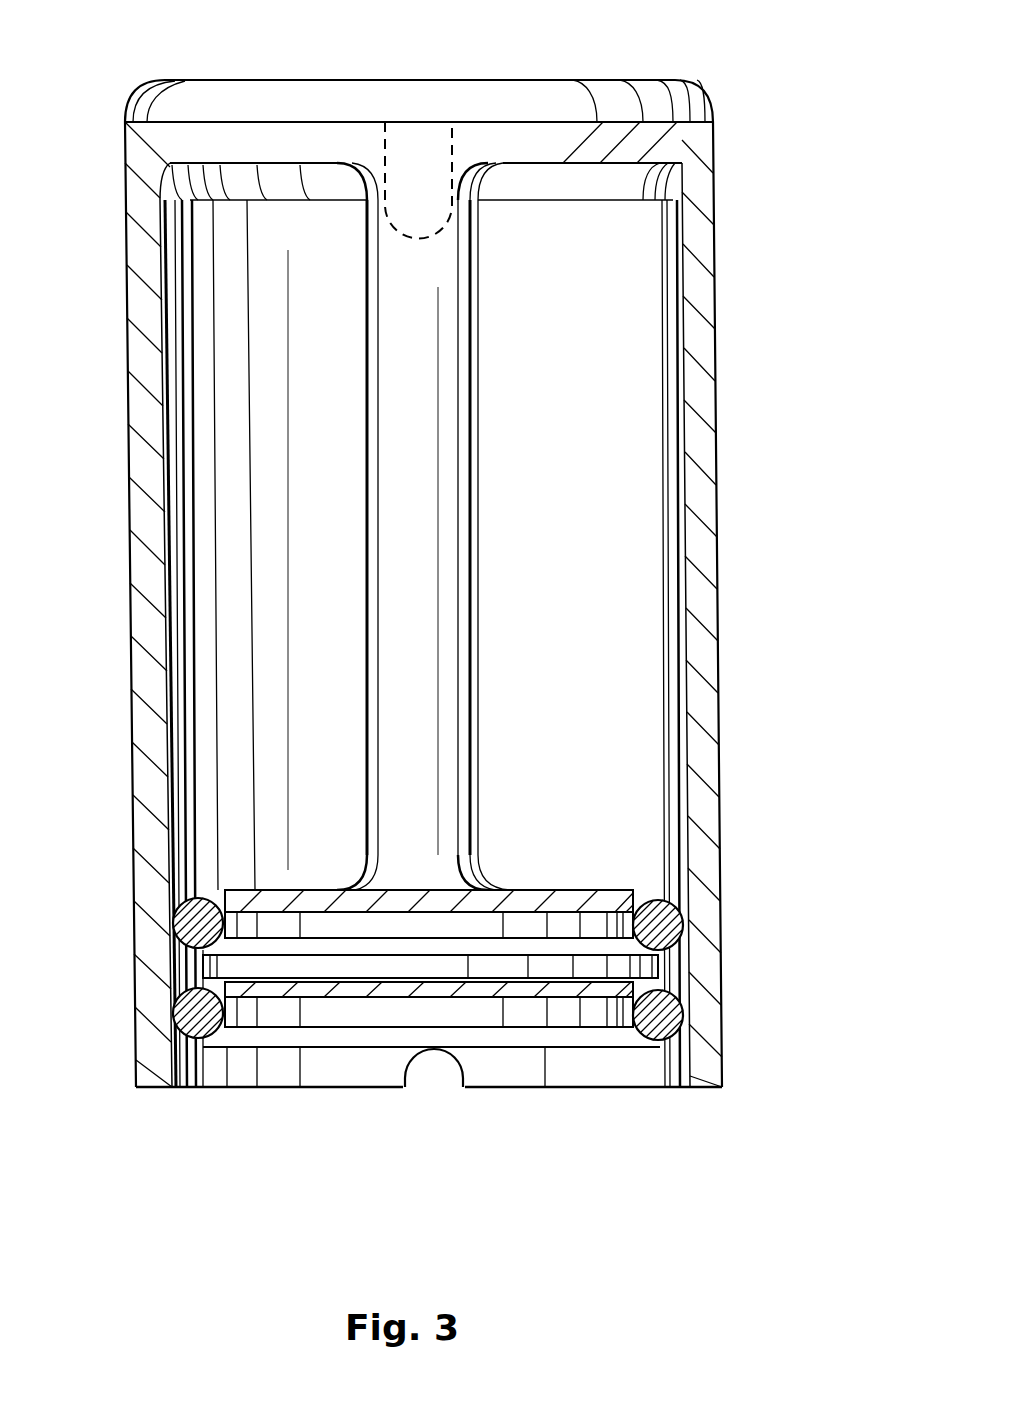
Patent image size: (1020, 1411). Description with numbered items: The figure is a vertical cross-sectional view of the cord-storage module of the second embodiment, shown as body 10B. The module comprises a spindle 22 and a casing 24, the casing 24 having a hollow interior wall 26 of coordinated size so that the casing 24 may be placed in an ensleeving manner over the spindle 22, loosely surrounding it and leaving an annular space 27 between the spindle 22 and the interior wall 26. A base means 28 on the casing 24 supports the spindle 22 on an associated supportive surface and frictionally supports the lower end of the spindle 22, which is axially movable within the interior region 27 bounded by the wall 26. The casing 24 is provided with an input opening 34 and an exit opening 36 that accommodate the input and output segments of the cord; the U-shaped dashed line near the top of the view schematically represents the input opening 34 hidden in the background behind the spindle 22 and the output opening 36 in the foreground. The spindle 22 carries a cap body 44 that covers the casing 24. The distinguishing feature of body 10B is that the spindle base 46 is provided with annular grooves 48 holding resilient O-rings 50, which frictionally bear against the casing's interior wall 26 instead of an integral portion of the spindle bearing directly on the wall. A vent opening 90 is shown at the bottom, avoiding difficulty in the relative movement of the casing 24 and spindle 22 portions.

The body 10B is at (862, 148).
The spindle 22 is at (447, 488).
The casing 24 is at (718, 410).
The interior wall 26 is at (685, 652).
The annular space 27 is at (588, 602).
The base means 28 is at (713, 1037).
The input opening 34 is at (452, 153).
The exit opening 36 is at (418, 180).
The cap body 44 is at (398, 87).
The spindle base 46 is at (545, 1053).
The annular grooves 48 is at (287, 923).
The O-rings 50 is at (688, 1000).
The vent opening 90 is at (440, 1067).